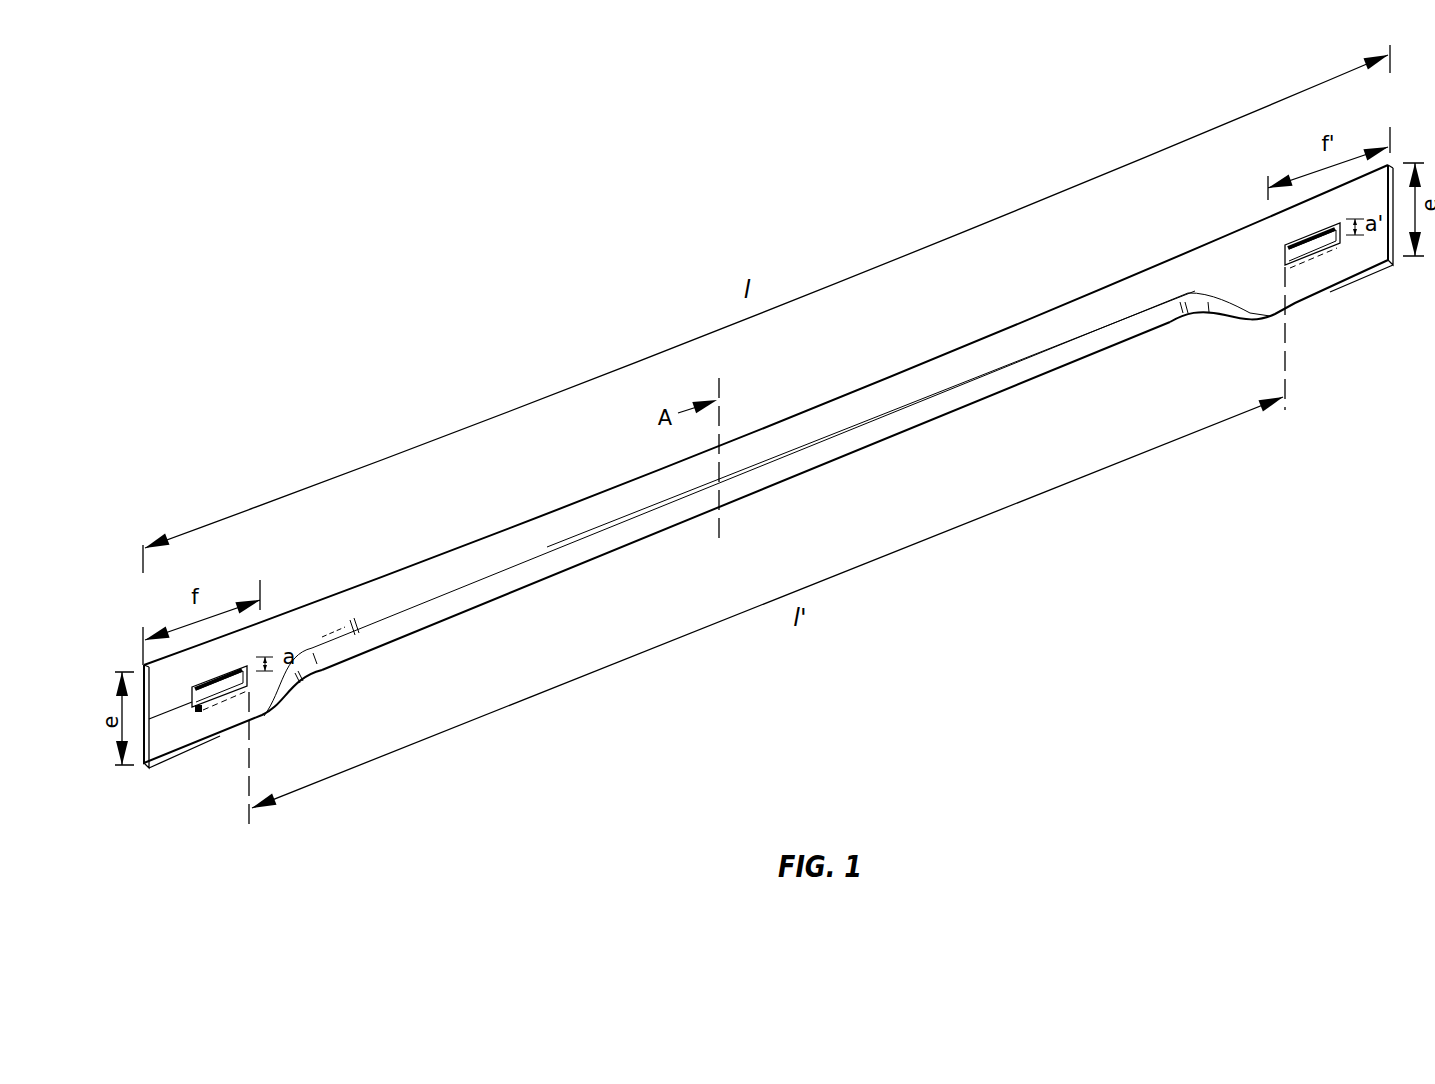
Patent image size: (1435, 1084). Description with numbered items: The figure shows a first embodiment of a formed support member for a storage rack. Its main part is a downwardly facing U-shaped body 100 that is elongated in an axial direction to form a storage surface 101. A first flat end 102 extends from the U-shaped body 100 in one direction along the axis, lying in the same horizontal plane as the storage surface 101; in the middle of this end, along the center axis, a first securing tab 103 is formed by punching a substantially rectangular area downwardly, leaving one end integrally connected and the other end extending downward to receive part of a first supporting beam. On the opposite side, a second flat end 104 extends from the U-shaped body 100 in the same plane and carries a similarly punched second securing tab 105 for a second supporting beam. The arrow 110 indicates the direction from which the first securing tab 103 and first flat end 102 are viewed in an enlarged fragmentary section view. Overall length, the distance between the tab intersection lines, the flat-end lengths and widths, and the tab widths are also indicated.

The U-shaped body 100 is at (772, 495).
The storage surface 101 is at (840, 415).
The first flat end 102 is at (247, 684).
The first securing tab 103 is at (205, 711).
The second flat end 104 is at (1285, 246).
The second securing tab 105 is at (1323, 258).
The arrow 110 is at (167, 720).